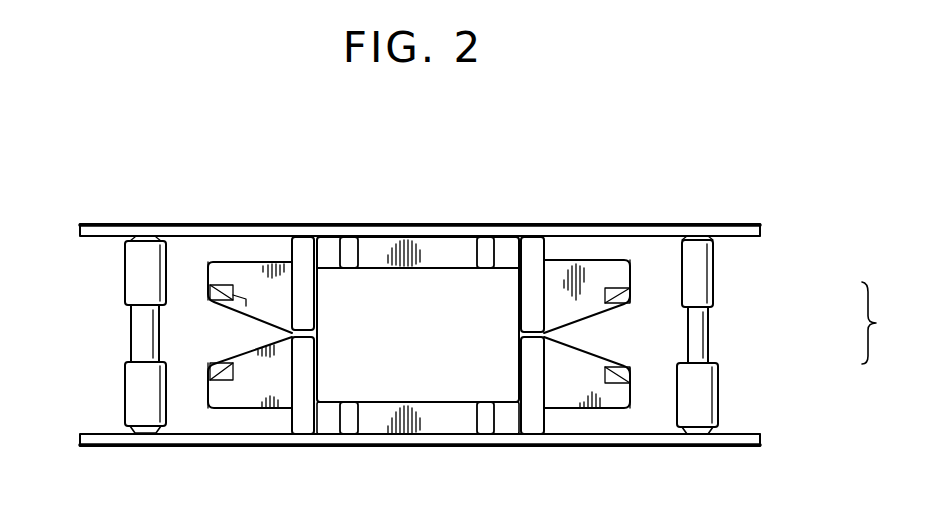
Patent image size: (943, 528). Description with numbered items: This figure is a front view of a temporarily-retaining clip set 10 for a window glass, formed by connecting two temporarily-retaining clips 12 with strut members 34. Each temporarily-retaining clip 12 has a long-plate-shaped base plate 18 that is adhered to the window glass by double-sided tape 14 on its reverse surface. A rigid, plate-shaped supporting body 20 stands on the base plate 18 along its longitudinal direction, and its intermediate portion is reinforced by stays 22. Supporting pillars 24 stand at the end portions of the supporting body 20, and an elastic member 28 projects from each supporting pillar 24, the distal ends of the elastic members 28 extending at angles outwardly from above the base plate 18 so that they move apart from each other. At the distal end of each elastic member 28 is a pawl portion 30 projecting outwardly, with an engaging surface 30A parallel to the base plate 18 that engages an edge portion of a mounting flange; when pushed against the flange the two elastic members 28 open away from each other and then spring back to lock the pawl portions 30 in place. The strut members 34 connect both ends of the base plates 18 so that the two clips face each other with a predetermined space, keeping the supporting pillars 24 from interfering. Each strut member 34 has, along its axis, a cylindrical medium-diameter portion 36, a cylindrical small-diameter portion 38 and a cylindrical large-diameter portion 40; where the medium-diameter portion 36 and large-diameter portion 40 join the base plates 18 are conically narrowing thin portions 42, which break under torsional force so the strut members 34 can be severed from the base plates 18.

The temporarily-retaining clip set 10 is at (886, 323).
The temporarily-retaining clip 12 is at (772, 230).
The double-sided tape 14 is at (620, 227).
The base plate 18 is at (474, 322).
The supporting body 20 is at (428, 252).
The stays 22 is at (360, 250).
The supporting pillars 24 is at (305, 250).
The elastic member 28 is at (248, 279).
The pawl portion 30 is at (248, 312).
The engaging surface 30A is at (222, 285).
The strut member 34 is at (436, 333).
The medium-diameter portion 36 is at (135, 392).
The small-diameter portion 38 is at (138, 337).
The large-diameter portion 40 is at (133, 275).
The thin portion 42 is at (139, 238).